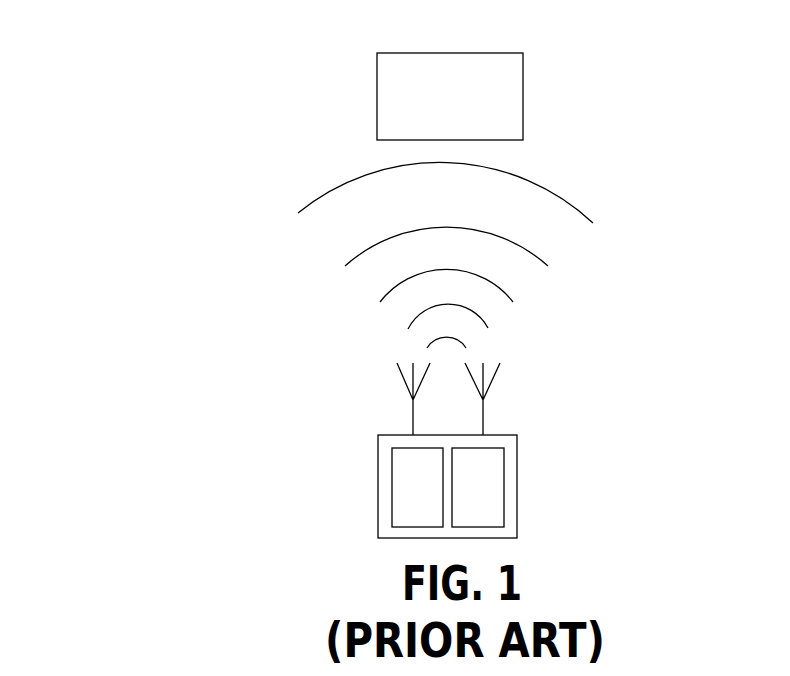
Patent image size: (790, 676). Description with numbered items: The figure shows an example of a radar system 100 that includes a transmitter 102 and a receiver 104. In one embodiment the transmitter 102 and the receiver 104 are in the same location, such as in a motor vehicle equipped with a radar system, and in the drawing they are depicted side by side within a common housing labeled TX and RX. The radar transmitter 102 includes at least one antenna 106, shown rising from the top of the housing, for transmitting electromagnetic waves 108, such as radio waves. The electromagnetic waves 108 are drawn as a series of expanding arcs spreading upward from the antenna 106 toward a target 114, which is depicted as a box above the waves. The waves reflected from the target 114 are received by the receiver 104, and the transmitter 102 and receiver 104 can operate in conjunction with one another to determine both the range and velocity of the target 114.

The radar system 100 is at (150, 36).
The transmitter 102 is at (504, 488).
The receiver 104 is at (392, 488).
The antenna 106 is at (498, 400).
The electromagnetic waves 108 is at (587, 190).
The target 114 is at (523, 98).